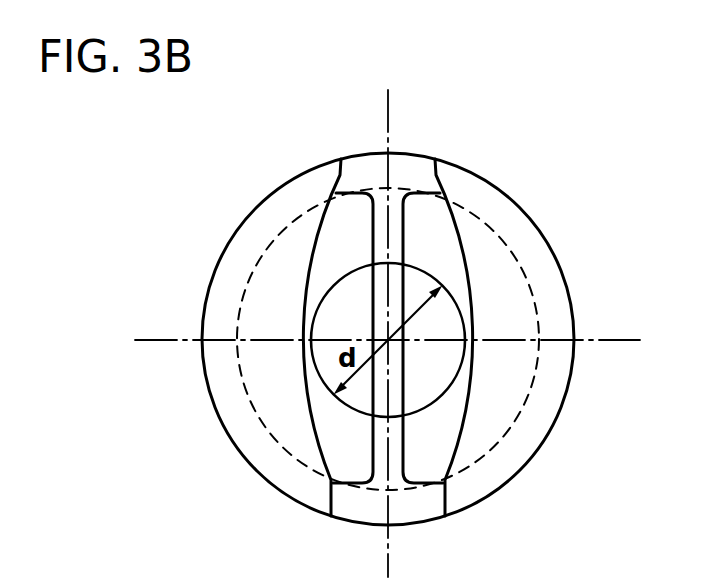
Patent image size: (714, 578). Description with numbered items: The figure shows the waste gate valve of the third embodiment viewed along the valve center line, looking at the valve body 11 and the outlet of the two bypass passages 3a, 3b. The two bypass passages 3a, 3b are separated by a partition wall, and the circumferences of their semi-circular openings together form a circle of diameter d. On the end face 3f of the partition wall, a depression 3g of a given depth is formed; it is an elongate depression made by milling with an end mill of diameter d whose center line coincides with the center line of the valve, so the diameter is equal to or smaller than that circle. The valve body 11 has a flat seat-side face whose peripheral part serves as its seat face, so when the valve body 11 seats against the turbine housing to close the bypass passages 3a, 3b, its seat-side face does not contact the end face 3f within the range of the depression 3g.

The valve body 11 is at (543, 275).
The bypass passage 3a is at (282, 392).
The bypass passage 3b is at (488, 397).
The end face of the partition wall 3f is at (395, 231).
The depression 3g is at (367, 283).